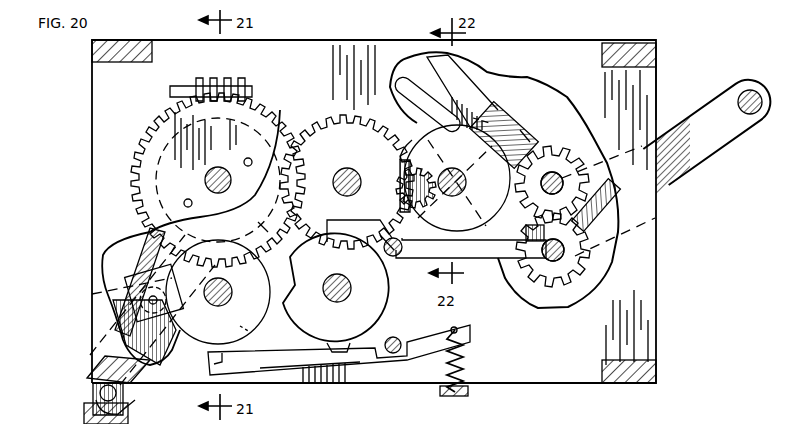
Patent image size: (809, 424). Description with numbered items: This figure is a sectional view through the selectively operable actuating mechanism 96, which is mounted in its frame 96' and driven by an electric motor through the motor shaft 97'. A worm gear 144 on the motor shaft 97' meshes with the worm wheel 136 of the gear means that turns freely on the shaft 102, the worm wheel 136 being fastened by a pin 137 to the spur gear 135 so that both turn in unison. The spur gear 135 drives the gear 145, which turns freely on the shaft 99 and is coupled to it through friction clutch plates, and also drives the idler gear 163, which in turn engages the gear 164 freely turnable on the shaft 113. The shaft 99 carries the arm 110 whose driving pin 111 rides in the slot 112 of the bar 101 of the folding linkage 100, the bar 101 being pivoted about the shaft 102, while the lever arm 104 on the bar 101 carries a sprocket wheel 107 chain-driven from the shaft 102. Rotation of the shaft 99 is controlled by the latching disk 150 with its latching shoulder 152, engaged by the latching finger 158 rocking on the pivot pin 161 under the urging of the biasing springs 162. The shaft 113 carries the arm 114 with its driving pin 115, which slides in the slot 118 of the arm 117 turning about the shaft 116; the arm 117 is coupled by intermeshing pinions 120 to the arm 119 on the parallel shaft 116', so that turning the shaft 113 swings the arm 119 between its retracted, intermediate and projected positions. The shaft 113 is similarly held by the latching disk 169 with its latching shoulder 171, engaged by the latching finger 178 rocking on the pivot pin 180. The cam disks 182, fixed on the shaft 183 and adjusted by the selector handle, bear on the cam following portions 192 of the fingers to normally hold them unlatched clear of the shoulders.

The actuating mechanism 96 is at (353, 211).
The frame 96' is at (669, 90).
The motor shaft 97' is at (207, 73).
The worm gear 144 is at (228, 78).
The worm wheel 136 is at (264, 118).
The shaft 102 is at (221, 166).
The pin 137 is at (186, 200).
The gear 145 is at (134, 212).
The idler gear 163 is at (314, 131).
The spur gear 135 is at (266, 224).
The gear 164 is at (404, 172).
The pivot pin 180 is at (400, 206).
The latching shoulder 171 is at (414, 150).
The shaft 113 is at (457, 170).
The slot 118 is at (410, 60).
The arm 114 is at (514, 124).
The driving pin 115 is at (494, 118).
The arm 117 is at (524, 140).
The shaft 116 is at (578, 177).
The shaft 116' is at (585, 233).
The pinions 120 is at (562, 160).
The latching disk 169 is at (528, 232).
The latching finger 178 is at (478, 262).
The arm 119 is at (680, 192).
The cam following portion 192 is at (332, 222).
The shaft 183 is at (346, 283).
The cam disks 182 is at (400, 306).
The slot 112 is at (150, 254).
The arm 110 is at (146, 284).
The driving pin 111 is at (94, 292).
The bar 101 is at (126, 338).
The linkage 100 is at (76, 374).
The sprocket wheel 107 is at (128, 399).
The lever arm 104 is at (40, 423).
The shaft 99 is at (242, 316).
The latching disk 150 is at (245, 329).
The latching shoulder 152 is at (200, 348).
The latching finger 158 is at (286, 362).
The pivot pin 161 is at (394, 353).
The biasing springs 162 is at (468, 361).